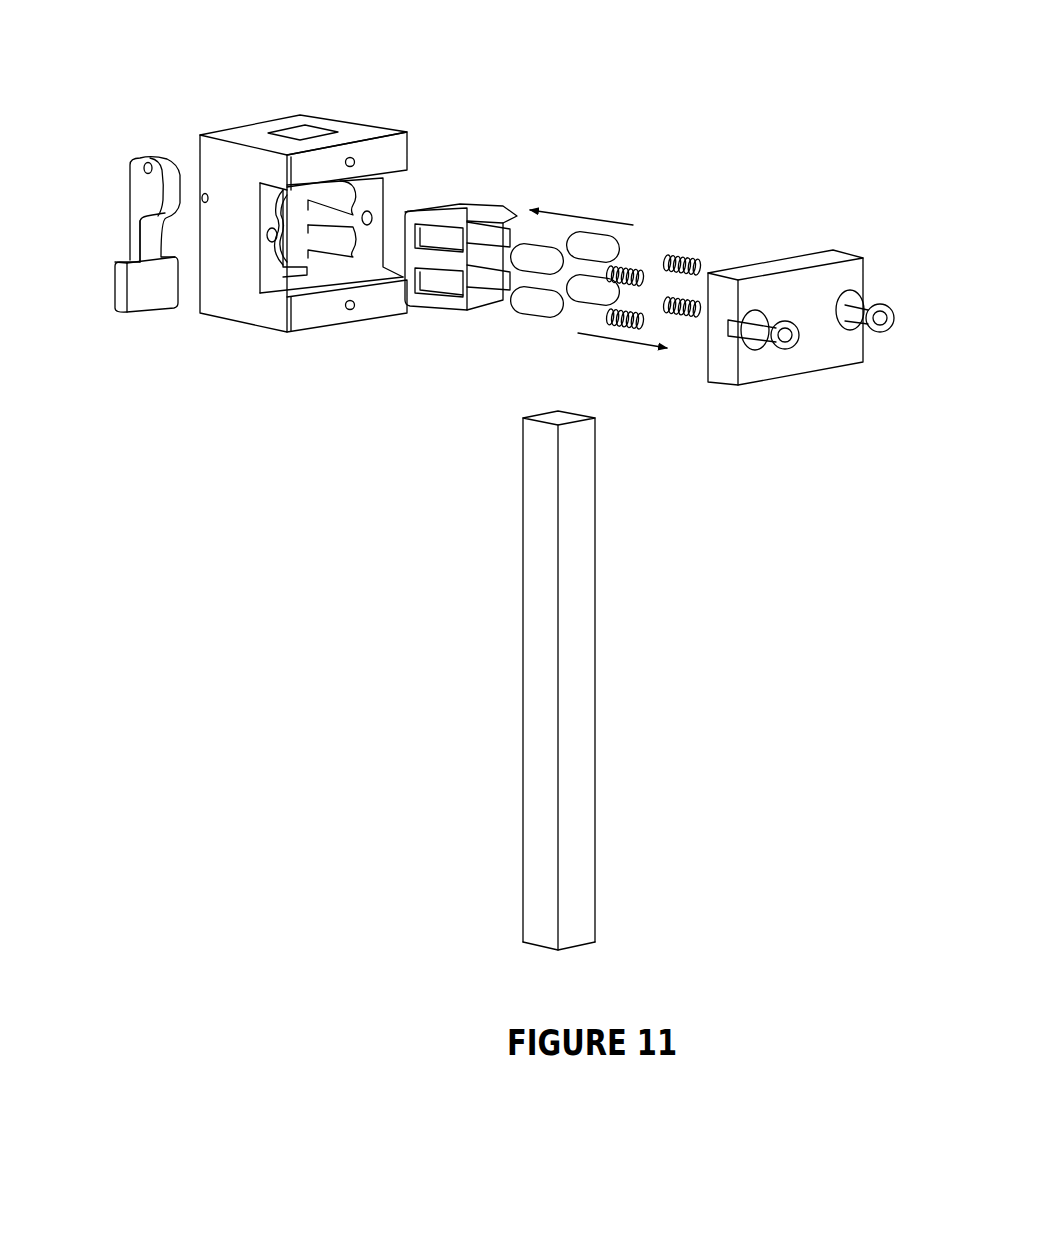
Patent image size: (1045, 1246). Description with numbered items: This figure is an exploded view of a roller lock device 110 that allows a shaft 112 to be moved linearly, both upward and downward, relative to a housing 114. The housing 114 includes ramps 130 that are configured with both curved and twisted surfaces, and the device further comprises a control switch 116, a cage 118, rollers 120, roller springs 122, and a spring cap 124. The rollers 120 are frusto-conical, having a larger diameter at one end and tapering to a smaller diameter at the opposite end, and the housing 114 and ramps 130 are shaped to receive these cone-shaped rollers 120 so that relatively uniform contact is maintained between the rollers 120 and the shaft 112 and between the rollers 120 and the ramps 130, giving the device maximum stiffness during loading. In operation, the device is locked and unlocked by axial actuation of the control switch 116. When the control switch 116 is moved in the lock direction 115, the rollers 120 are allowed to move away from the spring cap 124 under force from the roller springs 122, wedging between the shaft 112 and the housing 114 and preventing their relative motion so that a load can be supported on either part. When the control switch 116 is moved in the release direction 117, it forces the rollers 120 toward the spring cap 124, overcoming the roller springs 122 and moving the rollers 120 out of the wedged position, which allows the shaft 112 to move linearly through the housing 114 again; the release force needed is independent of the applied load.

The roller lock device 110 is at (433, 500).
The shaft 112 is at (596, 603).
The housing 114 is at (353, 120).
The lock direction 115 is at (604, 225).
The control switch 116 is at (137, 160).
The release direction 117 is at (602, 330).
The cage 118 is at (490, 207).
The rollers 120 is at (520, 322).
The roller springs 122 is at (689, 256).
The spring cap 124 is at (843, 250).
The ramps 130 is at (340, 193).